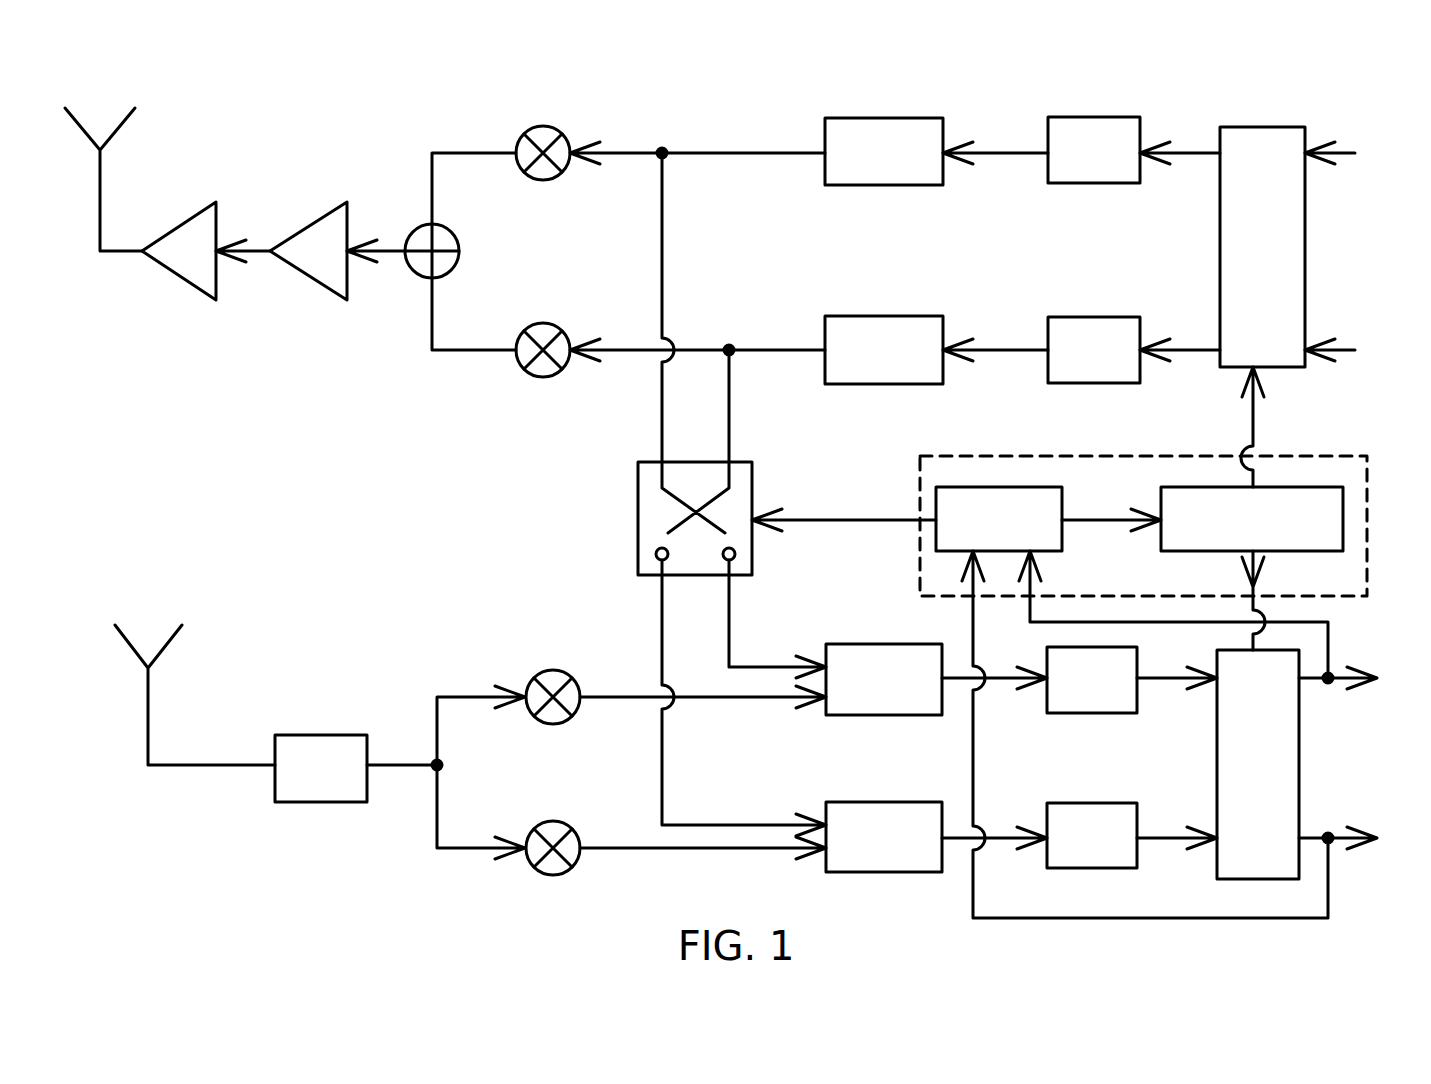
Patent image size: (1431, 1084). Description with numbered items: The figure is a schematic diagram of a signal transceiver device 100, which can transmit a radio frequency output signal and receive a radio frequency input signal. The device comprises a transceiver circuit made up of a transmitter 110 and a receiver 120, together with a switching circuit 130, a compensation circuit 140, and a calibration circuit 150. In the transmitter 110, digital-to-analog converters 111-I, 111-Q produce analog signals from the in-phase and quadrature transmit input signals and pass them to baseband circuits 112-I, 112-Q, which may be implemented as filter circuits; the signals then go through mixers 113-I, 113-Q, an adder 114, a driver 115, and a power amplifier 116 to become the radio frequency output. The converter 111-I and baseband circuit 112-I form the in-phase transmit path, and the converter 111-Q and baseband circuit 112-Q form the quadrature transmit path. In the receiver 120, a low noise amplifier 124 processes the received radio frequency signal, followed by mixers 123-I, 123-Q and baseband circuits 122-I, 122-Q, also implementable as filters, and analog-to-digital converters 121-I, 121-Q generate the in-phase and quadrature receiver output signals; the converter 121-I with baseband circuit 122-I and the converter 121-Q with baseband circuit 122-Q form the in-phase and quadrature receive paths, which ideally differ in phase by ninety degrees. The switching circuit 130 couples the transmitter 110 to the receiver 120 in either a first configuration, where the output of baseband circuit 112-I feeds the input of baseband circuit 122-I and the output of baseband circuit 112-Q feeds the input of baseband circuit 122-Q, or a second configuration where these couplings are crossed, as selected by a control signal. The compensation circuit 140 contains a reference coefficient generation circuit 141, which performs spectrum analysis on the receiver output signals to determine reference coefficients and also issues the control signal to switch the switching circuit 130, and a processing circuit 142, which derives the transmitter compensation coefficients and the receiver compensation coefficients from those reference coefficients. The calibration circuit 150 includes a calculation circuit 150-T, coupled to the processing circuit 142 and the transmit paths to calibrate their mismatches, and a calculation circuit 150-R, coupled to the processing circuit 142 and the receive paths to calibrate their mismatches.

The signal transceiver device 100 is at (693, 54).
The transmitter 110 is at (212, 343).
The digital-to-analog converter 111-I is at (1094, 150).
The digital-to-analog converter 111-Q is at (1094, 350).
The baseband circuit 112-I is at (884, 151).
The baseband circuit 112-Q is at (884, 350).
The mixer 113-I is at (543, 182).
The mixer 113-Q is at (543, 322).
The adder 114 is at (417, 277).
The driver 115 is at (308, 251).
The power amplifier 116 is at (179, 251).
The receiver 120 is at (213, 548).
The analog-to-digital converter 121-I is at (1092, 680).
The analog-to-digital converter 121-Q is at (1092, 835).
The baseband circuit 122-I is at (884, 679).
The baseband circuit 122-Q is at (884, 837).
The mixer 123-I is at (539, 718).
The mixer 123-Q is at (542, 827).
The low noise amplifier 124 is at (321, 768).
The switching circuit 130 is at (638, 520).
The compensation circuit 140 is at (920, 473).
The reference coefficient generation circuit 141 is at (999, 519).
The processing circuit 142 is at (1252, 519).
The calibration circuit 150 is at (1261, 503).
The calculation circuit 150-T is at (1262, 247).
The calculation circuit 150-R is at (1258, 764).